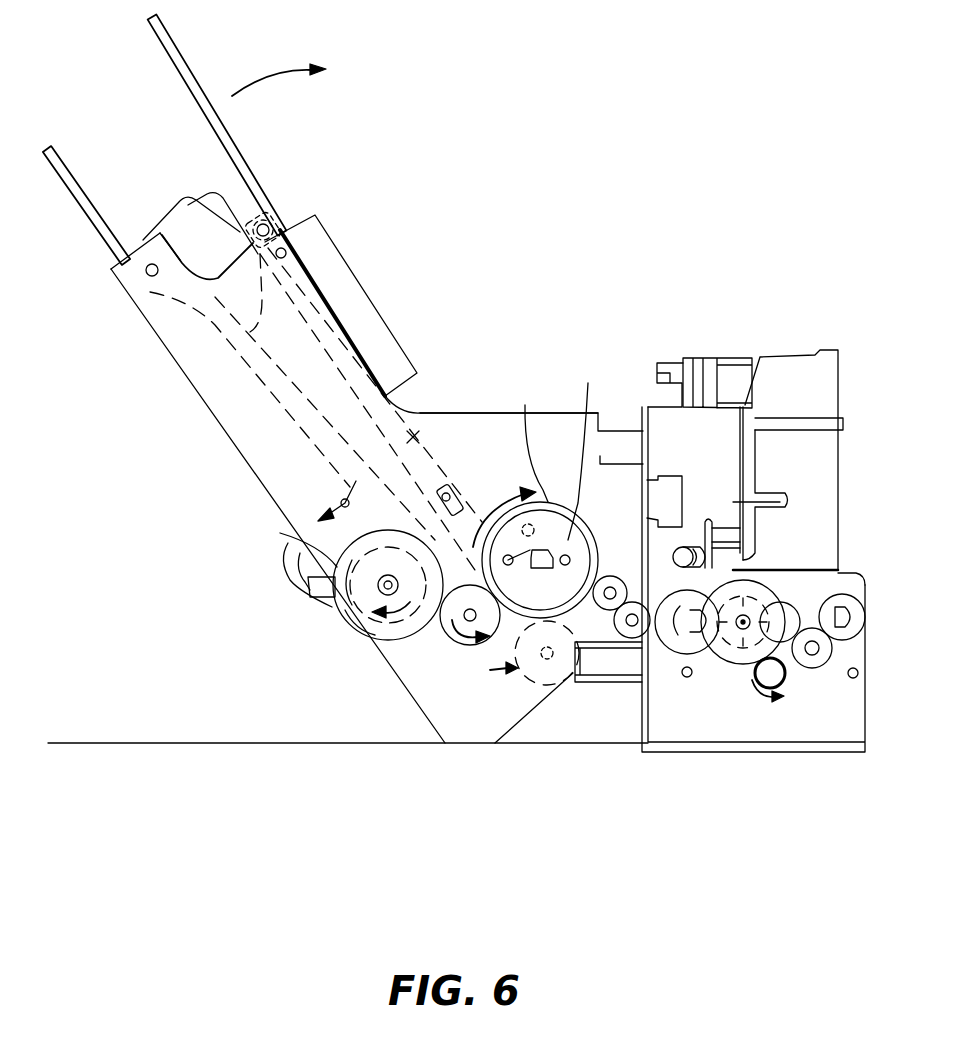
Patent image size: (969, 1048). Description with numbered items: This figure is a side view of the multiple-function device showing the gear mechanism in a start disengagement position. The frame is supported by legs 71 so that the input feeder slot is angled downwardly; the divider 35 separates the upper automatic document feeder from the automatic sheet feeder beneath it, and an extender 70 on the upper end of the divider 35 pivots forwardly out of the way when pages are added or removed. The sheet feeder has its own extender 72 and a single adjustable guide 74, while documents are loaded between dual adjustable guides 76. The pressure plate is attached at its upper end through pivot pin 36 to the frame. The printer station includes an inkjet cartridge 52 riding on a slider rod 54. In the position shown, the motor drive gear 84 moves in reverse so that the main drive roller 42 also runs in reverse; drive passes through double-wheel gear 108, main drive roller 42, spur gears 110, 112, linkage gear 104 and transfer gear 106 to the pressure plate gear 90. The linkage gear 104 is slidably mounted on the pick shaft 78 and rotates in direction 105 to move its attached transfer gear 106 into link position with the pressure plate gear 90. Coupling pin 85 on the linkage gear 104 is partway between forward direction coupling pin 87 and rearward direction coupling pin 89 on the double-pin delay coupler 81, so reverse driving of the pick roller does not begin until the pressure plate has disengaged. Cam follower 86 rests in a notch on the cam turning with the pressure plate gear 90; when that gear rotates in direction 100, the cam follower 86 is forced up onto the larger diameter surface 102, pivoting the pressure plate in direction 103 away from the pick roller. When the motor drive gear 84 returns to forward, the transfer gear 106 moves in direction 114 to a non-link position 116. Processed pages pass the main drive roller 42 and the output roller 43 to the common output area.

The extender 70 is at (167, 60).
The extender 72 is at (96, 229).
The adjustable guide 74 is at (183, 210).
The dual adjustable guides 76 is at (363, 290).
The pivot pin 36 is at (130, 293).
The divider 35 is at (457, 413).
The direction 103 is at (340, 495).
The linkage gear 104 is at (523, 436).
The coupling pin 85 is at (530, 524).
The double-pin delay coupler 81 is at (588, 390).
The forward direction coupling pin 87 is at (548, 552).
The direction 105 is at (490, 502).
The pick shaft 78 is at (560, 523).
The rearward direction coupling pin 89 is at (565, 566).
The cam follower 86 is at (300, 535).
The pressure plate gear 90 is at (347, 627).
The larger diameter surface 102 is at (360, 632).
The direction 100 is at (400, 653).
The transfer gear 106 is at (465, 647).
The direction 114 is at (480, 668).
The spur gear 112 is at (590, 645).
The spur gear 110 is at (604, 610).
The non-link position 116 is at (520, 672).
The legs 71 is at (462, 733).
The slider rod 54 is at (690, 545).
The inkjet cartridge 52 is at (827, 490).
The double-wheel gear 108 is at (763, 580).
The output roller 43 is at (843, 580).
The main drive roller 42 is at (700, 648).
The motor drive gear 84 is at (777, 680).